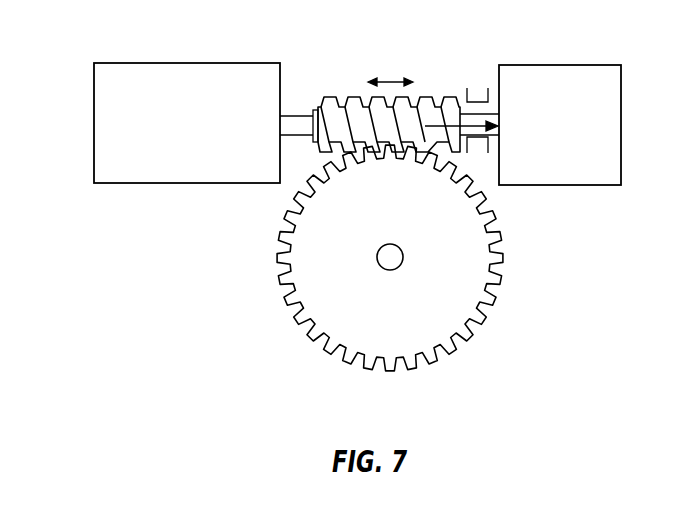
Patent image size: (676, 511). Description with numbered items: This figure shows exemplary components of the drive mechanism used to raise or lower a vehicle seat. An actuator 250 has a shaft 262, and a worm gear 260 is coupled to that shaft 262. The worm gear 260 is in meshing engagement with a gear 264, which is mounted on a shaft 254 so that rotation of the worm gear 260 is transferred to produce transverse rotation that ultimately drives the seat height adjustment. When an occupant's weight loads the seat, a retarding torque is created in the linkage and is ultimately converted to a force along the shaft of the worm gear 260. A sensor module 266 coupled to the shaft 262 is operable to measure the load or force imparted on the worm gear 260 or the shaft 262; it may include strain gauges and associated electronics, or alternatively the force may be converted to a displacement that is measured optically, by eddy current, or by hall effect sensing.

The actuator 250 is at (143, 173).
The shaft 262 is at (300, 122).
The worm gear 260 is at (330, 100).
The sensor module 266 is at (572, 77).
The gear 264 is at (497, 248).
The shaft 254 is at (393, 271).